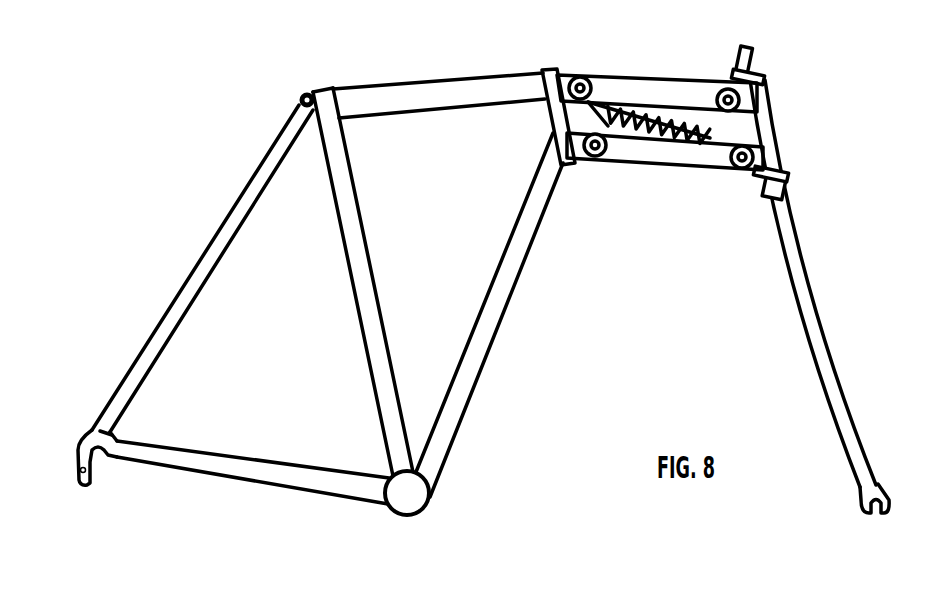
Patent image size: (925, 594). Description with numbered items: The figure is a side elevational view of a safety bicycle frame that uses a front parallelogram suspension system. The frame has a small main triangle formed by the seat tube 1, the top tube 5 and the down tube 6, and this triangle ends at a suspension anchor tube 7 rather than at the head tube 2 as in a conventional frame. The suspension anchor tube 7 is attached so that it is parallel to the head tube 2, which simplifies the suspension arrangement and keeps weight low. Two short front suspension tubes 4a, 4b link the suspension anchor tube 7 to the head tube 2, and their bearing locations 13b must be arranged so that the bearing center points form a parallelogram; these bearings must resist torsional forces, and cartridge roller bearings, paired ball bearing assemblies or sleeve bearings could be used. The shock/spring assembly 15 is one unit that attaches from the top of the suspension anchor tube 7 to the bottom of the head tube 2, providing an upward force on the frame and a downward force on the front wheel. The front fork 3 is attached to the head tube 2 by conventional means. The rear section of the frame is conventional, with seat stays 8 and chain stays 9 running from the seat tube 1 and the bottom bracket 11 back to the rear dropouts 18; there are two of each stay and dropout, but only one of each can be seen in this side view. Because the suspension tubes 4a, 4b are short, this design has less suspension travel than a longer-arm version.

The seat tube 1 is at (364, 307).
The head tube 2 is at (763, 127).
The front fork 3 is at (807, 303).
The front suspension tube 4a is at (665, 88).
The front suspension tube 4b is at (668, 153).
The top tube 5 is at (434, 95).
The down tube 6 is at (488, 330).
The suspension anchor tube 7 is at (558, 122).
The seat stays 8 is at (221, 242).
The chain stays 9 is at (248, 472).
The bottom bracket 11 is at (407, 516).
The bearing locations 13b is at (579, 77).
The shock/spring assembly 15 is at (620, 104).
The rear dropouts 18 is at (78, 462).